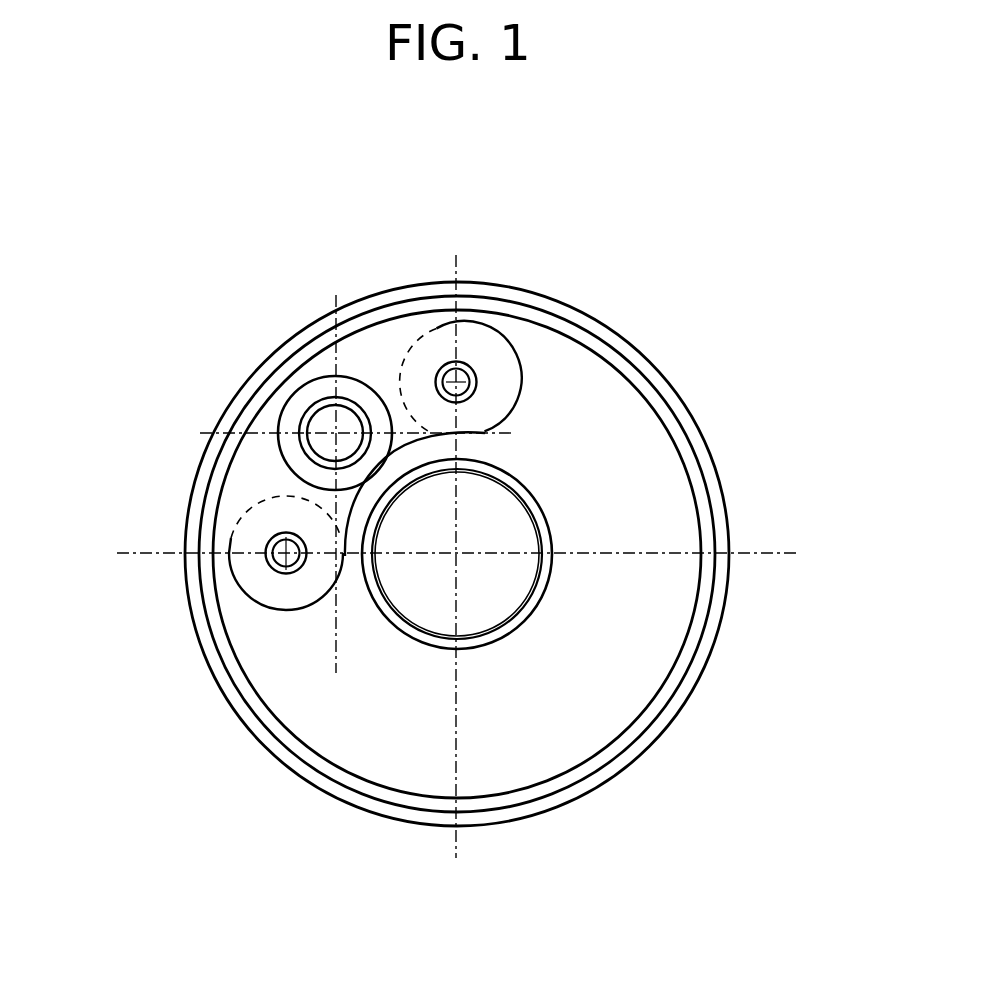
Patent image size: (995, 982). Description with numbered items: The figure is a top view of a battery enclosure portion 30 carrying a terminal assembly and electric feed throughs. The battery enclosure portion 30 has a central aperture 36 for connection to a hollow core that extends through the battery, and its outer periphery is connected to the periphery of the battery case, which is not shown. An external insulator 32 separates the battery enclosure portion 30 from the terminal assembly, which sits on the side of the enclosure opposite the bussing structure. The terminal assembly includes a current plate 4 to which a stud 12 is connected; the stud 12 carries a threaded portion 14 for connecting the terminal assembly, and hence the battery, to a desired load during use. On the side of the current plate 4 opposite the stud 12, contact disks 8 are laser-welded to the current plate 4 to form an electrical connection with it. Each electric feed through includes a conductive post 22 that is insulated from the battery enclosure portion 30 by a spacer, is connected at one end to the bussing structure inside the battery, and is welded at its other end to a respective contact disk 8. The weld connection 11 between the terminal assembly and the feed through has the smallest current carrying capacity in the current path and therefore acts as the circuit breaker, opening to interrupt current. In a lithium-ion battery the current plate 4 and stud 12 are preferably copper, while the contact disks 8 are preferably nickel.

The current plate 4 is at (370, 365).
The contact disk 8 is at (407, 353).
The weld connection 11 is at (443, 367).
The stud 12 is at (280, 443).
The threaded portion 14 is at (313, 417).
The conductive post 22 is at (470, 373).
The battery enclosure portion 30 is at (668, 728).
The external insulator 32 is at (705, 596).
The central aperture 36 is at (493, 521).